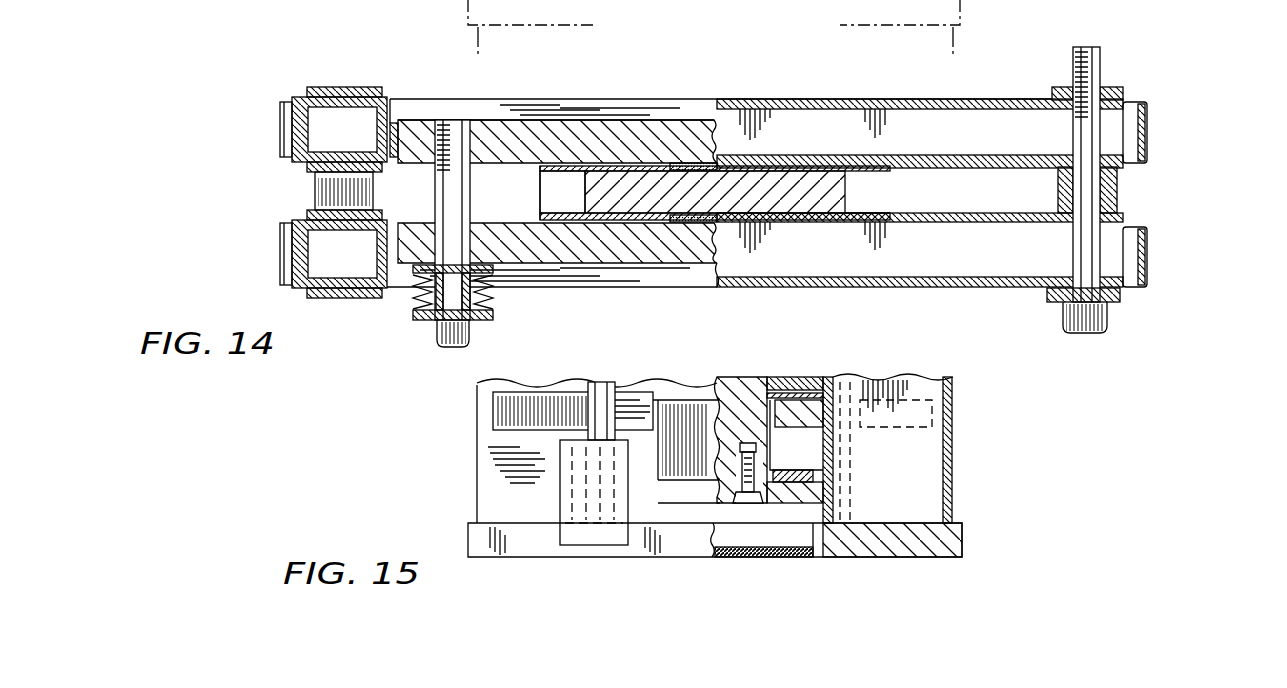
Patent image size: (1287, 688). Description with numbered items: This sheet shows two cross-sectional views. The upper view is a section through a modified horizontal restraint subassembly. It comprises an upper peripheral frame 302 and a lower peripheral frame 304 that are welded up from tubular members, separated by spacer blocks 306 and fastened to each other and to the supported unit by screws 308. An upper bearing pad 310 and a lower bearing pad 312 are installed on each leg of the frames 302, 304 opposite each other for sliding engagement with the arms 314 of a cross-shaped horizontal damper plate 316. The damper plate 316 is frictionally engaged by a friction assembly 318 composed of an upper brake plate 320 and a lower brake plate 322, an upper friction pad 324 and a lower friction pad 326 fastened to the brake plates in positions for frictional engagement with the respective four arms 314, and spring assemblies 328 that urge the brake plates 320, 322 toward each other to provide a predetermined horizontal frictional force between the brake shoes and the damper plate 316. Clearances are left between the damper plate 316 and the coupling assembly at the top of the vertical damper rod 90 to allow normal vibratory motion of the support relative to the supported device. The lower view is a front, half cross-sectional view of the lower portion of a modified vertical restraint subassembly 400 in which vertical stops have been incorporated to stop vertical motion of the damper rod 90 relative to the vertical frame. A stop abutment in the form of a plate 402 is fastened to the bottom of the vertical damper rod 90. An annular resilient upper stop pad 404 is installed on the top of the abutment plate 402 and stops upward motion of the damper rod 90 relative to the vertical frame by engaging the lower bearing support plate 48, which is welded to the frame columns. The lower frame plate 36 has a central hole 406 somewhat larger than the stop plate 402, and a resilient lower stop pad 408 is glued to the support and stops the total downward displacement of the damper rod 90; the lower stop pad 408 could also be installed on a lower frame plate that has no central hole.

In FIG. 14, the upper peripheral frame 302 is at (1147, 100).
In FIG. 14, the lower peripheral frame 304 is at (1140, 288).
In FIG. 14, the spacer block 306 is at (318, 187).
In FIG. 14, the screw 308 is at (1110, 333).
In FIG. 14, the upper bearing pad 310 is at (762, 194).
In FIG. 14, the lower bearing pad 312 is at (890, 216).
In FIG. 14, the arm 314 is at (845, 188).
In FIG. 14, the horizontal damper plate 316 is at (585, 190).
In FIG. 14, the friction assembly 318 is at (545, 119).
In FIG. 14, the upper brake plate 320 is at (608, 128).
In FIG. 14, the lower brake plate 322 is at (595, 258).
In FIG. 14, the upper friction pad 324 is at (686, 163).
In FIG. 14, the lower friction pad 326 is at (685, 222).
In FIG. 14, the spring assembly 328 is at (420, 317).
In FIG. 15, the vertical damper rod 90 is at (748, 395).
In FIG. 15, the lower bearing support plate 48 is at (821, 392).
In FIG. 15, the vertical restraint subassembly 400 is at (967, 440).
In FIG. 15, the stop abutment plate 402 is at (803, 497).
In FIG. 15, the upper stop pad 404 is at (780, 468).
In FIG. 15, the central hole 406 is at (825, 540).
In FIG. 15, the lower stop pad 408 is at (770, 548).
In FIG. 15, the lower plate 36 is at (935, 550).